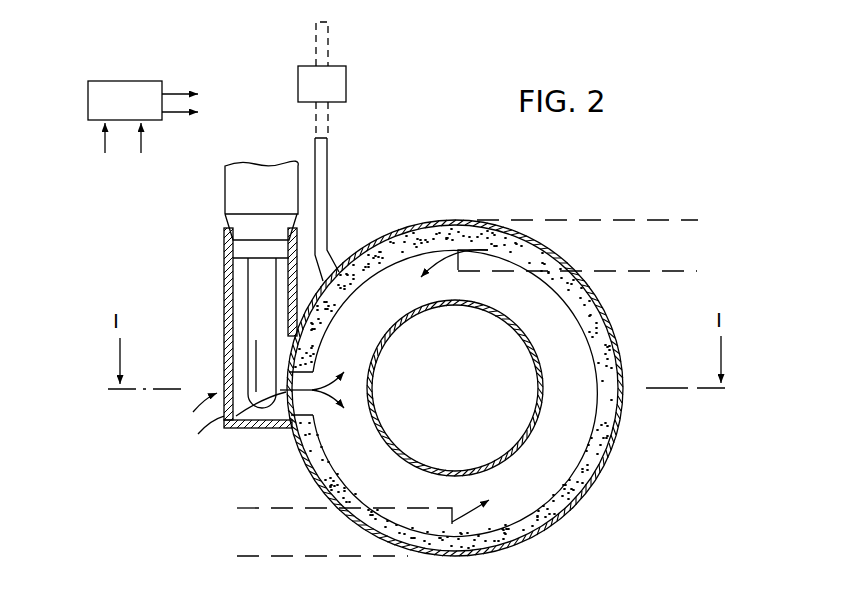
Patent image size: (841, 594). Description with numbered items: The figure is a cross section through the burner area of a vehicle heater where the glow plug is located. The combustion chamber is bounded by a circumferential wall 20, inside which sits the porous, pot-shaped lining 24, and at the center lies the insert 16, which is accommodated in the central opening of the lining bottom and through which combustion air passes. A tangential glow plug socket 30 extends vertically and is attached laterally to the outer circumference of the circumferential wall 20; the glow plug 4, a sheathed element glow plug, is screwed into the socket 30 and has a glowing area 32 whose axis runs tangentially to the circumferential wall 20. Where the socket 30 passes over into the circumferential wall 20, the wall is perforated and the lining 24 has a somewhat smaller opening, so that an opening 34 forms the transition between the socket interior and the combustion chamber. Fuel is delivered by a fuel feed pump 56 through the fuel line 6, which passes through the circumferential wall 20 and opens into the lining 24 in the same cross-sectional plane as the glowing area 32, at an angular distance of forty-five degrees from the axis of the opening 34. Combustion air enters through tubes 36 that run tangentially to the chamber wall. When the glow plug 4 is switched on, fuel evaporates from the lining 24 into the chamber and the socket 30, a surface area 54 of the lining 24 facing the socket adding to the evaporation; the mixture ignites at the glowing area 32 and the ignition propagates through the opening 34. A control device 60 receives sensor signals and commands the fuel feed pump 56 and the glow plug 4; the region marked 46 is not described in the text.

The glow plug 4 is at (232, 178).
The fuel line 6 is at (328, 212).
The insert 16 is at (541, 368).
The circumferential wall 20 is at (428, 224).
The lining 24 is at (580, 470).
The glow plug socket 30 is at (225, 306).
The glowing area 32 is at (249, 410).
The opening 34 is at (247, 430).
The tubes 36 is at (485, 262).
The inlet flow 46 is at (224, 380).
The surface area 54 is at (278, 430).
The fuel feed pump 56 is at (348, 80).
The control device 60 is at (143, 117).